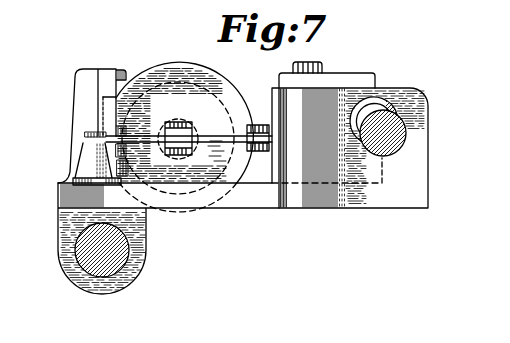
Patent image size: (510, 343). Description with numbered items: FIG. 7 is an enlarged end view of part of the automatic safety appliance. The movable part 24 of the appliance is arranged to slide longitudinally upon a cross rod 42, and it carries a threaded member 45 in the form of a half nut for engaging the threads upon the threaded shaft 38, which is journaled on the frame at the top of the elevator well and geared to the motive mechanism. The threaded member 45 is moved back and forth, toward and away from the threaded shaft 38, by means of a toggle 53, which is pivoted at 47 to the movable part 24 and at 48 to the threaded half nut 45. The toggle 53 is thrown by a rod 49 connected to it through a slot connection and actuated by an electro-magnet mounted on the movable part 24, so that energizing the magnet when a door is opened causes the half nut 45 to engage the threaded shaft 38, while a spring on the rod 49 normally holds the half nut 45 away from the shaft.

The movable part 24 is at (312, 106).
The threaded shaft 38 is at (398, 128).
The cross rod 42 is at (100, 263).
The threaded member 45 is at (276, 105).
The pivot 47 is at (85, 136).
The pivot 48 is at (265, 152).
The rod 49 is at (181, 136).
The toggle 53 is at (121, 113).